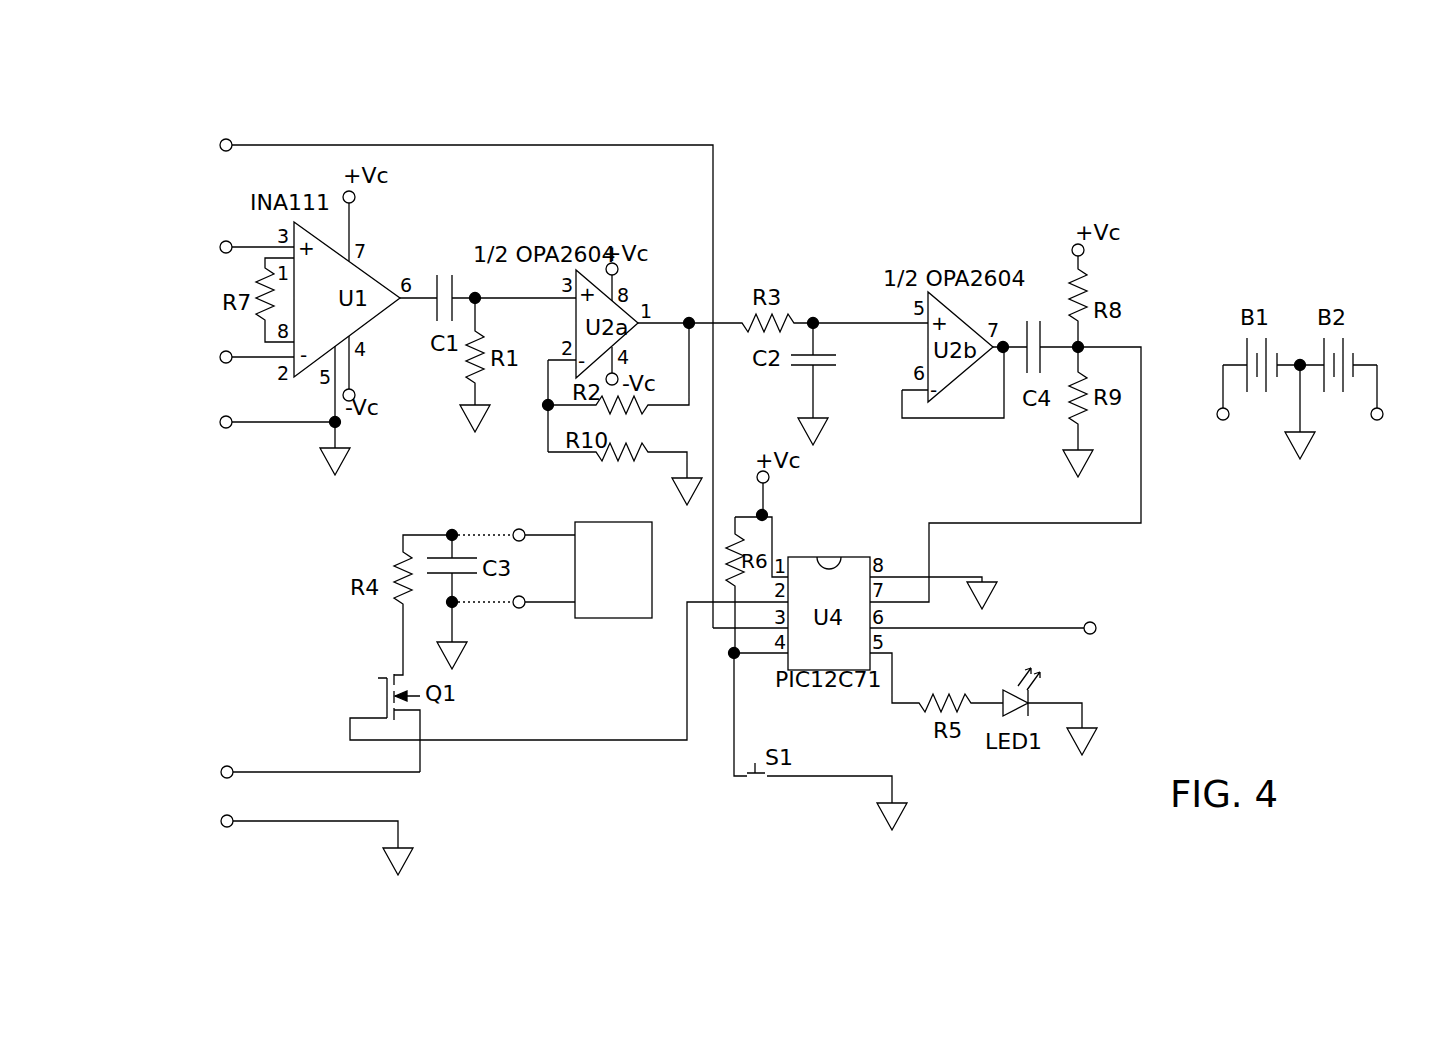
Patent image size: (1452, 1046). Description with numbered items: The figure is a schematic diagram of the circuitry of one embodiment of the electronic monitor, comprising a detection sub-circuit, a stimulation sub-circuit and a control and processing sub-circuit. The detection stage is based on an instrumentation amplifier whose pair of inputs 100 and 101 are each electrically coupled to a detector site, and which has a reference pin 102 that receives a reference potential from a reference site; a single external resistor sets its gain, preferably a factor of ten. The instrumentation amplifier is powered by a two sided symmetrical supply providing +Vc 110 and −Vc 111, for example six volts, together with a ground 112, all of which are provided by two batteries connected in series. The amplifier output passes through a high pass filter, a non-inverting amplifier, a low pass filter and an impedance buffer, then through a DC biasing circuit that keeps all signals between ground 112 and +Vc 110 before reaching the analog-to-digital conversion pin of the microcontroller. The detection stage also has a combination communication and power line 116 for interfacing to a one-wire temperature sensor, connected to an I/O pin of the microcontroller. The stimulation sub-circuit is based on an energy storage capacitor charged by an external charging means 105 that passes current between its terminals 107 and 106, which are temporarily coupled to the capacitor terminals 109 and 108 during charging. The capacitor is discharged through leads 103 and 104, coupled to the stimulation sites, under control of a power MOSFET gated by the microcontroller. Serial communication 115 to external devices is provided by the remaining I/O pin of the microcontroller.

The amplifier input 100 is at (216, 247).
The amplifier input 101 is at (216, 357).
The reference pin 102 is at (216, 422).
The stimulation lead 103 is at (217, 772).
The stimulation lead 104 is at (217, 821).
The external charging means 105 is at (652, 580).
The charging means terminal 106 is at (519, 529).
The charging means terminal 107 is at (519, 608).
The capacitor terminal 108 is at (458, 532).
The capacitor terminal 109 is at (457, 606).
The +Vc supply 110 is at (1222, 456).
The −Vc supply 111 is at (1378, 452).
The ground 112 is at (1300, 464).
The serial communication 115 is at (1093, 633).
The combination communication and power line 116 is at (216, 145).